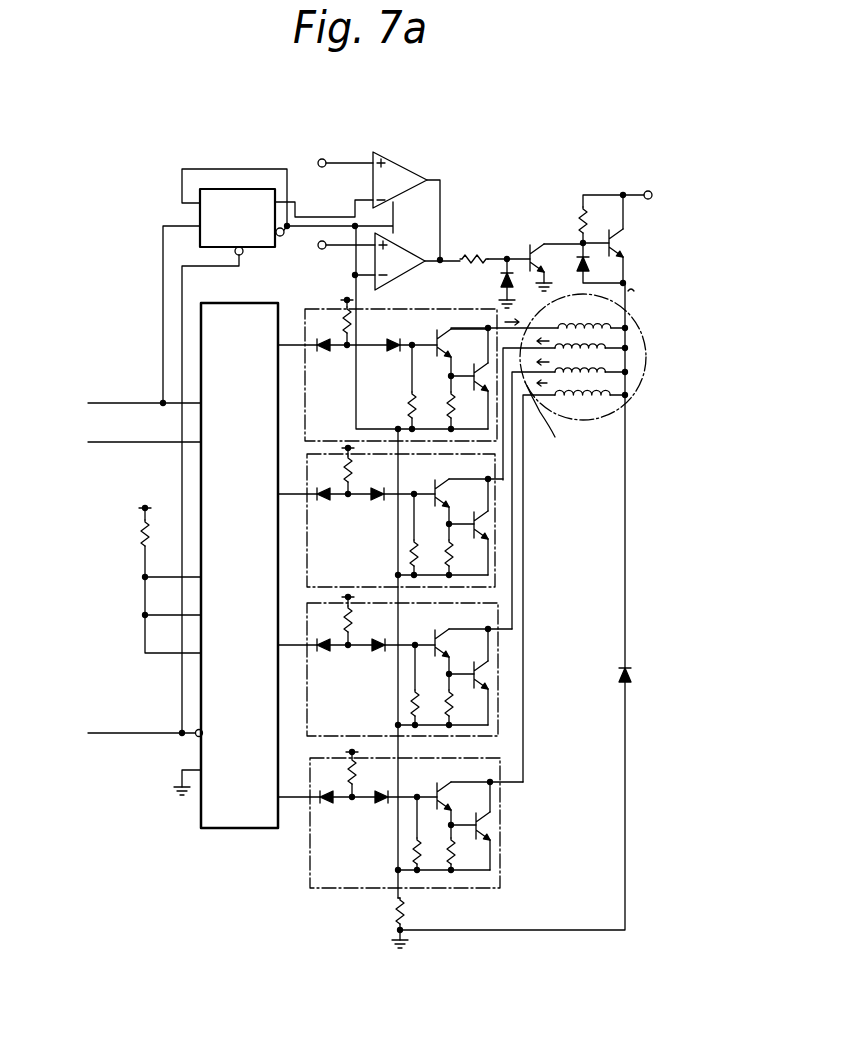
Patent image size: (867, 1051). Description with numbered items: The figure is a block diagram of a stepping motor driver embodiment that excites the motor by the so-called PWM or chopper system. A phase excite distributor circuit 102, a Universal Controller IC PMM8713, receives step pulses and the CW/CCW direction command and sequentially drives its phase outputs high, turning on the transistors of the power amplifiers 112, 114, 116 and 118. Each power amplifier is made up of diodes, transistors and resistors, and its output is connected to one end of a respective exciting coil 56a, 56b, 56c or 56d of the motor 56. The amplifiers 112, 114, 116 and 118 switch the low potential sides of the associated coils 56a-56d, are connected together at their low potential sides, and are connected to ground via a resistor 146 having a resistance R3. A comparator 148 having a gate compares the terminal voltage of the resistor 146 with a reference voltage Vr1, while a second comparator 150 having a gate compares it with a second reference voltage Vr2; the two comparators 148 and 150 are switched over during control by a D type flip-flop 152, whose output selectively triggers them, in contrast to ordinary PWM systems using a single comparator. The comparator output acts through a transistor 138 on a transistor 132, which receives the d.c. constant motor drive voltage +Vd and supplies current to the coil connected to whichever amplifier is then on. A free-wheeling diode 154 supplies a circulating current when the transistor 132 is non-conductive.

The flip-flop 152 is at (238, 188).
The comparator 148 is at (417, 168).
The comparator 150 is at (419, 253).
The transistor 138 is at (522, 251).
The transistor 132 is at (618, 242).
The free-wheeling diode 154 is at (638, 673).
The motor 56 is at (610, 423).
The exciting coil 56a is at (625, 320).
The exciting coil 56b is at (625, 344).
The exciting coil 56c is at (628, 373).
The exciting coil 56d is at (625, 397).
The phase excite distributor circuit 102 is at (236, 830).
The power amplifier 112 is at (450, 308).
The power amplifier 114 is at (495, 500).
The power amplifier 116 is at (498, 613).
The power amplifier 118 is at (500, 843).
The resistor 146 is at (392, 912).